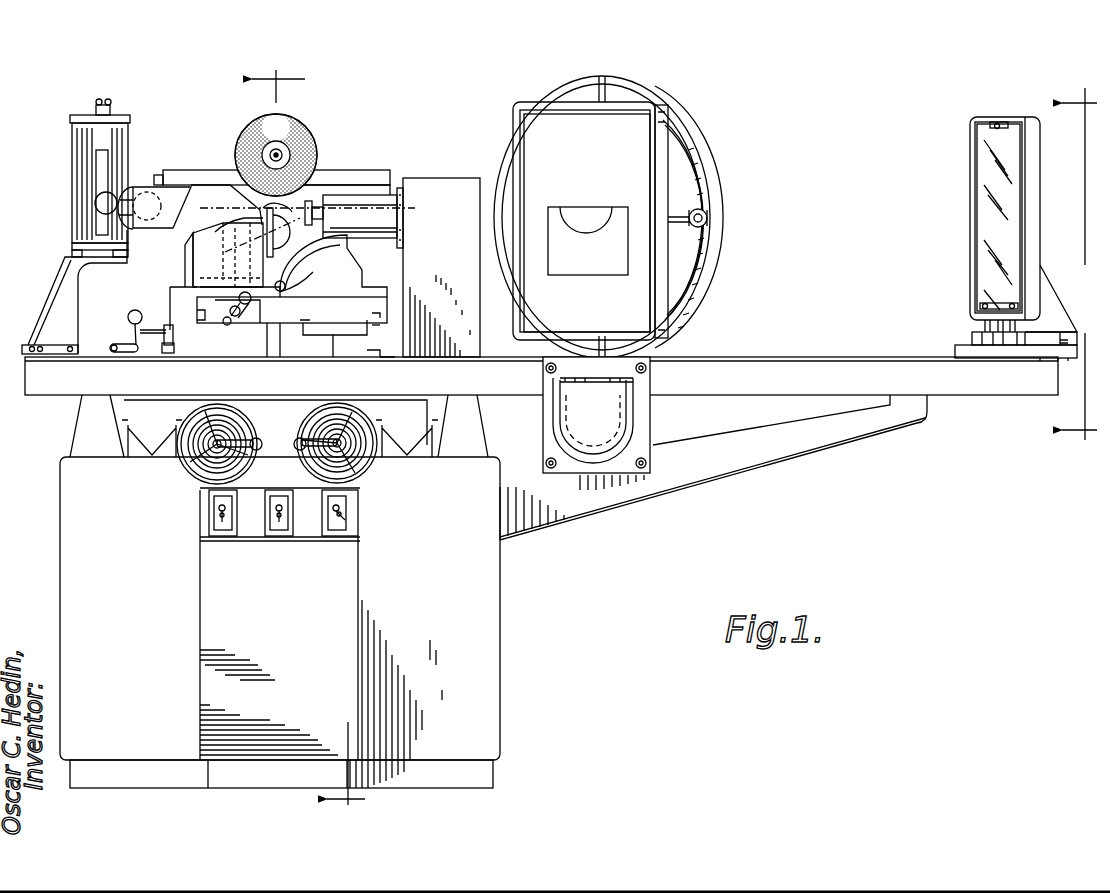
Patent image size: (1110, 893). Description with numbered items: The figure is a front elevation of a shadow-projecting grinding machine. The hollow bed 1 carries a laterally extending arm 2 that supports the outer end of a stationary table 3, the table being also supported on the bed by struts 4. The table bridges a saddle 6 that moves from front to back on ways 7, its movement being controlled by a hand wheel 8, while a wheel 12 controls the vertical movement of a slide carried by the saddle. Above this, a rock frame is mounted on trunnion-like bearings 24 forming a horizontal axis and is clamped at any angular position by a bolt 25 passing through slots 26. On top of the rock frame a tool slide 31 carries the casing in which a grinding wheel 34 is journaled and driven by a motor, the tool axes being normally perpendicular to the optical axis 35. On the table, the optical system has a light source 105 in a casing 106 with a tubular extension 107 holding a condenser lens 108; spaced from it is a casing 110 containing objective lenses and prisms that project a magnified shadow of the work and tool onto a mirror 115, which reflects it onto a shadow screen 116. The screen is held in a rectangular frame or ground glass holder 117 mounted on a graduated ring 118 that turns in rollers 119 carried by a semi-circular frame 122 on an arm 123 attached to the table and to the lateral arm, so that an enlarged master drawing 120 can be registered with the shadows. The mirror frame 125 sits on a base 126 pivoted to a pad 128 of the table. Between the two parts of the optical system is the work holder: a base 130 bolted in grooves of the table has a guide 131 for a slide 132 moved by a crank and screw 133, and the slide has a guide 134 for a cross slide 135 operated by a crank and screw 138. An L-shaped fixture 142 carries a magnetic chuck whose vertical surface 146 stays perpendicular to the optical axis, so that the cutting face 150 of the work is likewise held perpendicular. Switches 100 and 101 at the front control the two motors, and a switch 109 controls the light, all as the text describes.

The hollow bed 1 is at (492, 614).
The laterally extending arm 2 is at (792, 455).
The table 3 is at (818, 366).
The struts 4 is at (500, 424).
The saddle 6 is at (135, 418).
The ways 7 is at (160, 455).
The hand wheel 8 is at (190, 470).
The wheel 12 is at (365, 418).
The trunnion-like bearings 24 is at (284, 236).
The bolt 25 is at (285, 283).
The slots 26 is at (315, 277).
The tool slide 31 is at (350, 180).
The grinding wheel 34 is at (316, 140).
The optical axis 35 is at (200, 215).
The switch 100 is at (212, 520).
The switch 101 is at (352, 520).
The light source 105 is at (72, 203).
The casing 106 is at (72, 148).
The tubular extension 107 is at (178, 168).
The condenser lens 108 is at (150, 192).
The switch 109 is at (275, 538).
The casing 110 is at (425, 182).
The mirror 115 is at (985, 228).
The shadow screen 116 is at (640, 185).
The rectangular frame or ground glass holder 117 is at (665, 124).
The ring 118 is at (640, 86).
The rollers 119 is at (709, 216).
The enlarged master drawing 120 is at (568, 236).
The semi-circular frame 122 is at (692, 300).
The arm 123 is at (640, 419).
The frame 125 is at (1030, 200).
The base 126 is at (972, 338).
The pad 128 is at (1005, 360).
The base 130 is at (302, 358).
The guide 131 is at (367, 331).
The slide 132 is at (305, 340).
The crank and screw 133 is at (150, 322).
The guide 134 is at (258, 320).
The cross slide 135 is at (288, 308).
The crank and screw 138 is at (232, 318).
The fixture 142 is at (215, 253).
The vertical surface 146 is at (244, 217).
The cutting face 150 is at (283, 207).